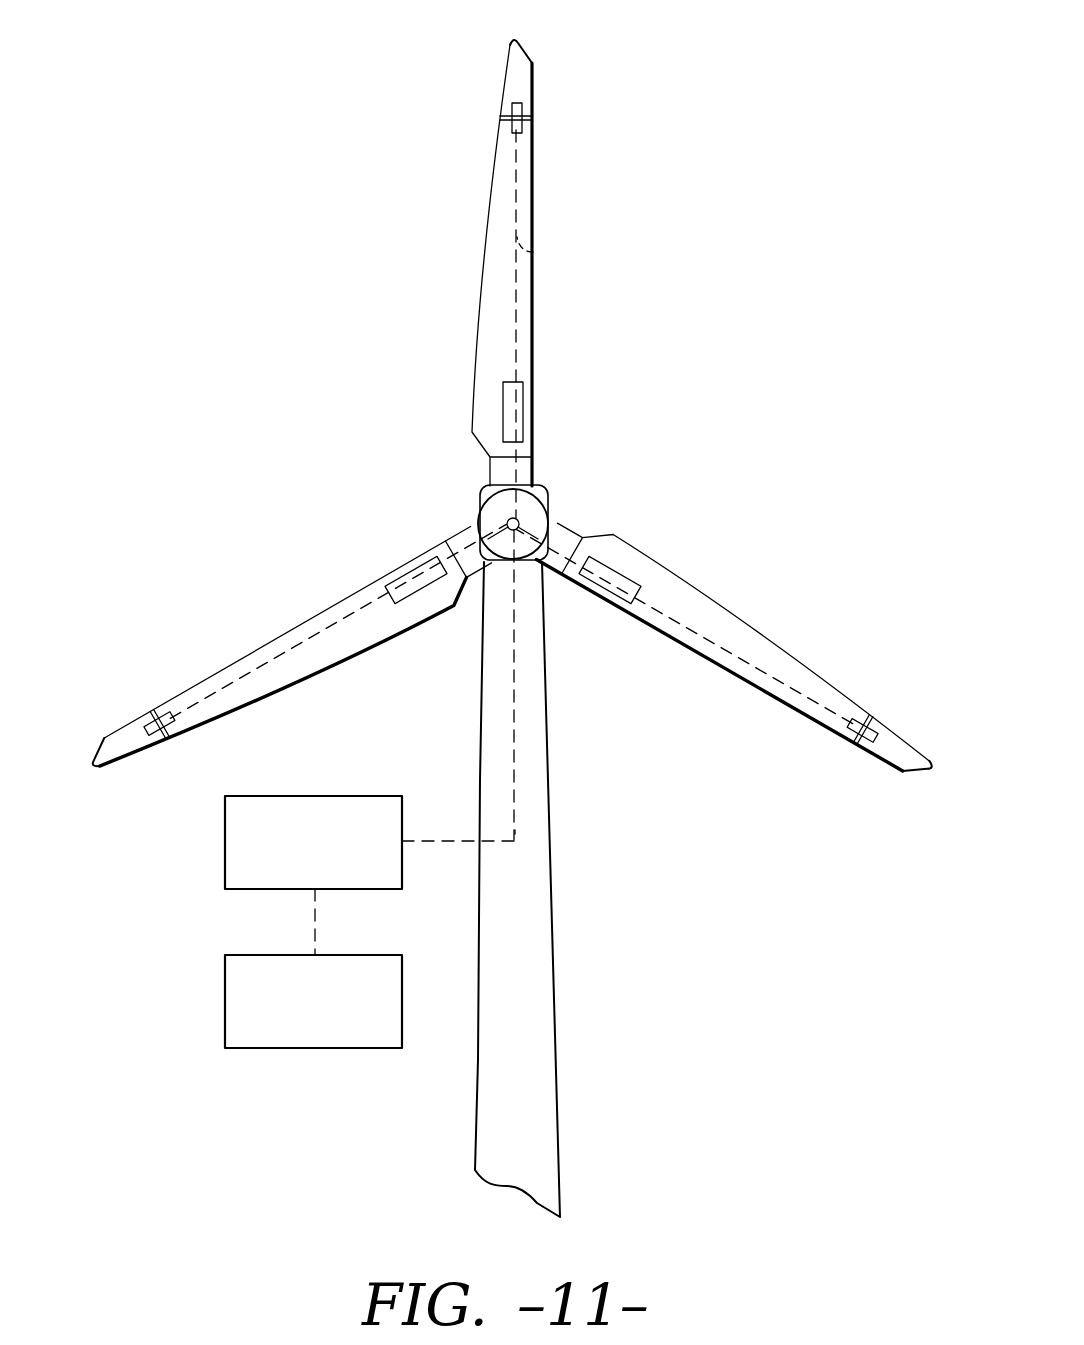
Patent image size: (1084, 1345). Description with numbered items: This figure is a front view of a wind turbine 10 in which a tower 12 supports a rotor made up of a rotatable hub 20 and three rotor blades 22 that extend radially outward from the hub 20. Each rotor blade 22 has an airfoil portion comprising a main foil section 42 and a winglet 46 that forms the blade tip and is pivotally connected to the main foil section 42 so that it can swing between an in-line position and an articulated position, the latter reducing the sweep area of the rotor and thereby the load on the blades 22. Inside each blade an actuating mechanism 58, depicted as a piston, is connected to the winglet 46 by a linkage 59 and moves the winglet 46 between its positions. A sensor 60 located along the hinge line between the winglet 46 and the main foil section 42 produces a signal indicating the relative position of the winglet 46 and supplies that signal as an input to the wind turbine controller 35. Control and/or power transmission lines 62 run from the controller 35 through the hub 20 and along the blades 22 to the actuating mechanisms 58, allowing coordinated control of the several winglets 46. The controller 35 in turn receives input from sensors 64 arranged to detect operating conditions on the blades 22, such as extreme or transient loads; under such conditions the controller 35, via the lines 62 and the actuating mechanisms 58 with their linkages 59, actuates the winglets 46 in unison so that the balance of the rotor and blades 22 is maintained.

The wind turbine 10 is at (724, 184).
The tower 12 is at (557, 1018).
The rotor hub 20 is at (520, 503).
The rotor blade 22 is at (764, 642).
The wind turbine controller 35 is at (223, 857).
The main foil section 42 is at (497, 293).
The winglet 46 is at (517, 65).
The actuating mechanism 58 is at (513, 403).
The linkage 59 is at (535, 252).
The sensor 60 is at (518, 103).
The control and/or power transmission lines 62 is at (325, 625).
The sensors 64 is at (223, 1015).